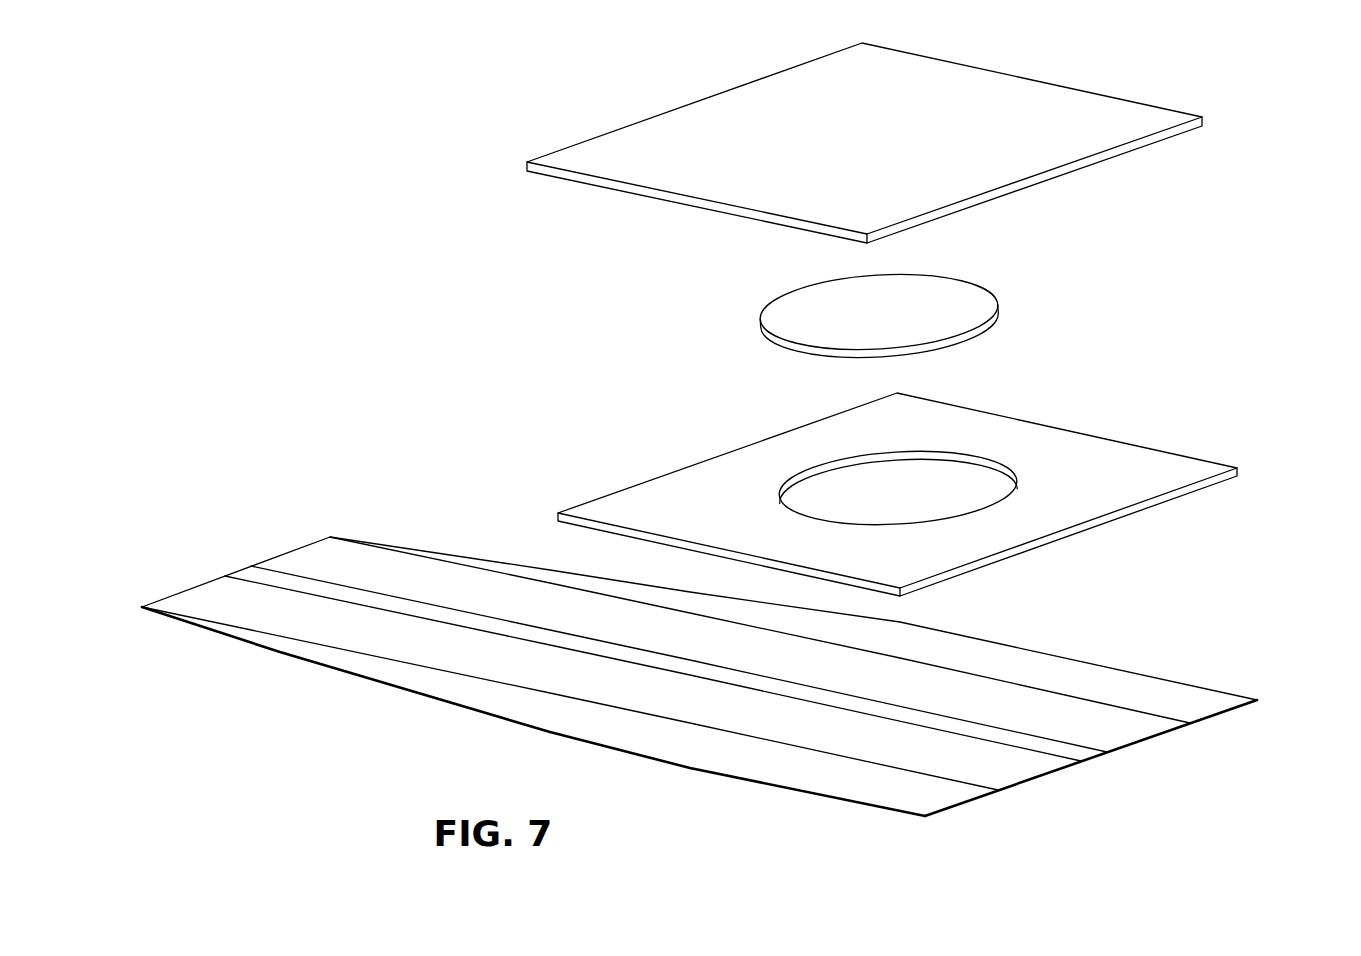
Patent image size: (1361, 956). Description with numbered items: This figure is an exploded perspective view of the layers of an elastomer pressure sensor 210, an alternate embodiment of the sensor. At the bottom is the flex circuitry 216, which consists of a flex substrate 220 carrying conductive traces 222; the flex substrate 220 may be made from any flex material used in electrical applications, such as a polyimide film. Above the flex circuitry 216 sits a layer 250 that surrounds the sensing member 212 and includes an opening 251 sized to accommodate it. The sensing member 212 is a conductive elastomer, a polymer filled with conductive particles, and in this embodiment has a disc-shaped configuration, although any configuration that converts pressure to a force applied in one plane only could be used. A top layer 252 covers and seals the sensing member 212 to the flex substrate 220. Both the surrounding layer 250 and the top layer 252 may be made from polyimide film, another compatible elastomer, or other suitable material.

The pressure sensor 210 is at (738, 586).
The sensing member 212 is at (1020, 293).
The flex circuitry 216 is at (1258, 680).
The flex substrate 220 is at (1047, 663).
The conductive traces 222 is at (1022, 762).
The layer 250 is at (921, 472).
The opening 251 is at (940, 485).
The top layer 252 is at (1048, 70).